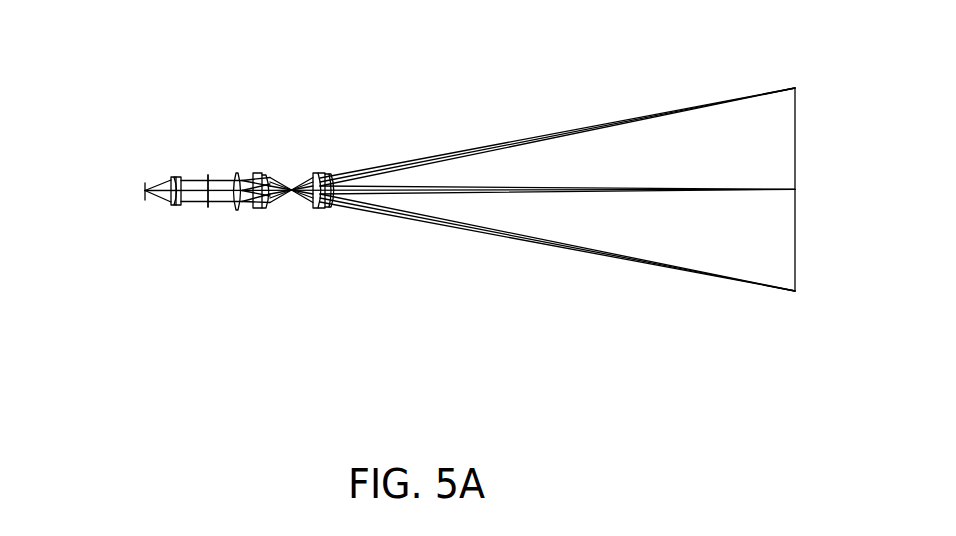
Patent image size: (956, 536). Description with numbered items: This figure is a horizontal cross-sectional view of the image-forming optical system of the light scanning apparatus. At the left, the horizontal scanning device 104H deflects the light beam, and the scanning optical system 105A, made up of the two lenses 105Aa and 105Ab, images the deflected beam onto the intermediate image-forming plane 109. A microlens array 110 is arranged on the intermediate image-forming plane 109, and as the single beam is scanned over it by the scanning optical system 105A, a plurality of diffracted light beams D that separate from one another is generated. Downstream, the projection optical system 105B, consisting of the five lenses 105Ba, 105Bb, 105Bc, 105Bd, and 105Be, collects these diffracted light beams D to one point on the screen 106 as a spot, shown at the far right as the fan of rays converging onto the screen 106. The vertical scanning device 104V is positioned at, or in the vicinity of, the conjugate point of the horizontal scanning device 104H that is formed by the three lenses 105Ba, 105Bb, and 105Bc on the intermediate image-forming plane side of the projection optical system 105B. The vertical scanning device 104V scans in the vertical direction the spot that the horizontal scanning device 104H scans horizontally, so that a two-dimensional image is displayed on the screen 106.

The horizontal scanning device 104H is at (145, 175).
The vertical scanning device 104V is at (290, 175).
The scanning optical system 105A is at (110, 294).
The lens 105Aa is at (172, 210).
The lens 105Ab is at (182, 212).
The projection optical system 105B is at (356, 242).
The lens 105Ba is at (232, 215).
The lens 105Bb is at (257, 213).
The lens 105Bc is at (272, 212).
The lens 105Bd is at (318, 212).
The lens 105Be is at (426, 258).
The screen 106 is at (783, 115).
The intermediate image-forming plane 109 is at (208, 172).
The microlens array 110 is at (202, 172).
The diffracted light beams D is at (222, 170).